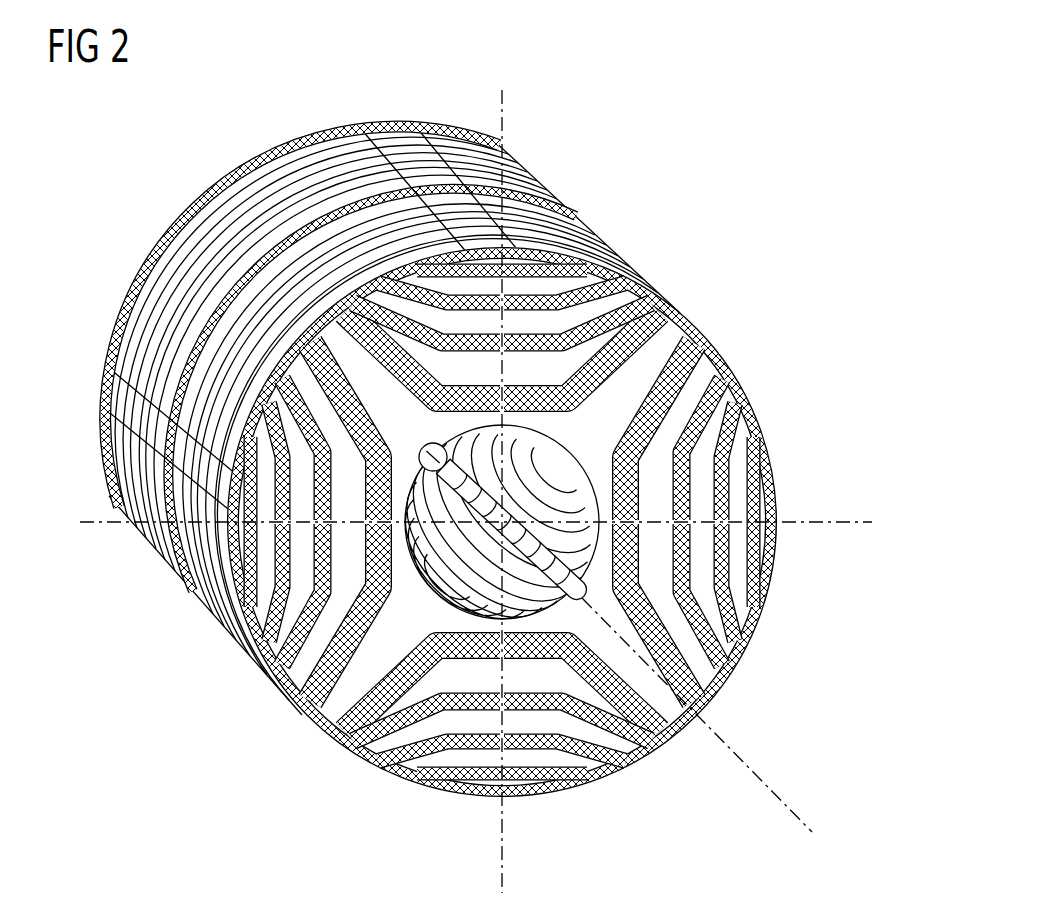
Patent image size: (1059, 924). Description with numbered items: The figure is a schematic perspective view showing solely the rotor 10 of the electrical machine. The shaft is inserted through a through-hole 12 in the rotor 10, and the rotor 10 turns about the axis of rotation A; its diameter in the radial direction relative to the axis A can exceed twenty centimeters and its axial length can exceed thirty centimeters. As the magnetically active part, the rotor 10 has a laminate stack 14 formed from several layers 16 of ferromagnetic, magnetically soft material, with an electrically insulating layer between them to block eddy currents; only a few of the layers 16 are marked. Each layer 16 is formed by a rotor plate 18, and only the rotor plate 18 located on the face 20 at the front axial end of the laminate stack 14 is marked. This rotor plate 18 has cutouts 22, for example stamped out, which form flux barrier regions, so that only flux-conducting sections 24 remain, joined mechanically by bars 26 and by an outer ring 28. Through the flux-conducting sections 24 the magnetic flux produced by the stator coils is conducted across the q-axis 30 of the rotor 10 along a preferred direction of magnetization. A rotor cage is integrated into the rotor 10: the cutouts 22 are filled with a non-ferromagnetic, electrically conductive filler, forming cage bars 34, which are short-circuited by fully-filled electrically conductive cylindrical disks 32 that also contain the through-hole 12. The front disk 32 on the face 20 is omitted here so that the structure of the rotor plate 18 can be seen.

The rotor 10 is at (686, 110).
The through-hole 12 is at (477, 590).
The laminate stack 14 is at (247, 180).
The layers 16 is at (306, 165).
The rotor plate 18 is at (735, 402).
The face 20 is at (622, 417).
The cutouts 22 is at (551, 768).
The flux-conducting sections 24 is at (313, 712).
The bars 26 is at (640, 553).
The outer ring 28 is at (548, 255).
The q-axis 30 is at (502, 92).
The cylindrical disks 32 is at (198, 200).
The cage bars 34 is at (647, 308).
The axis of rotation A is at (812, 832).